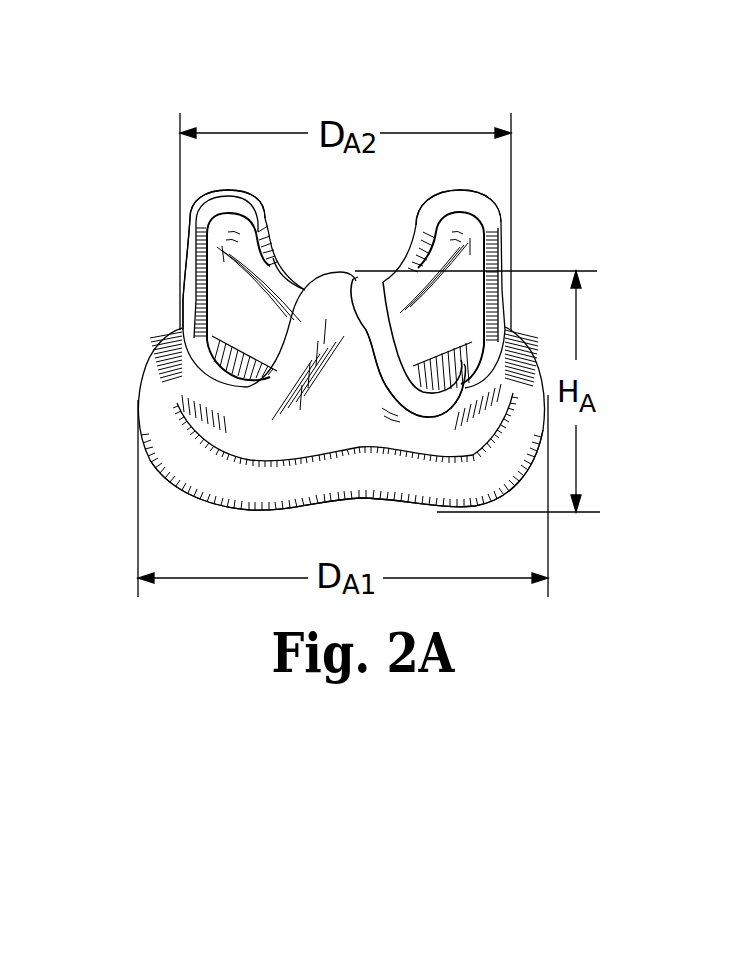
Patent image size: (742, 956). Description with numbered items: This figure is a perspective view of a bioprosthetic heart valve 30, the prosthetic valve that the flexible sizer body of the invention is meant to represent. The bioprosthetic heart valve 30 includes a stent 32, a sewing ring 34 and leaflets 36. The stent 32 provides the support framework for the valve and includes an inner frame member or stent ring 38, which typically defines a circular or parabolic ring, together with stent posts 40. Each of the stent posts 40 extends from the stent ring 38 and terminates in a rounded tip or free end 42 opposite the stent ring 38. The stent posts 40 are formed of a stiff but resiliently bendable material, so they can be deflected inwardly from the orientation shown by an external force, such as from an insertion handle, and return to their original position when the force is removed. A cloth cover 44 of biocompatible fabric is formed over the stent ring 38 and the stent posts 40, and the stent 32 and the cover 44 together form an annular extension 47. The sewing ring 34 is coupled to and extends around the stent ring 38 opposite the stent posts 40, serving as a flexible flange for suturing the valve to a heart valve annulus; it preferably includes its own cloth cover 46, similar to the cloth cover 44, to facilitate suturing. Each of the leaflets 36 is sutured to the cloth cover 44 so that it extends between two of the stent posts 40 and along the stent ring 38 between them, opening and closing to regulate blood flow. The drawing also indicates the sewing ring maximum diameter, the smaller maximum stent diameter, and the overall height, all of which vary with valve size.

The bioprosthetic heart valve 30 is at (488, 162).
The stent 32 is at (386, 292).
The sewing ring 34 is at (150, 390).
The leaflets 36 is at (287, 286).
The stent ring 38 is at (424, 417).
The stent posts 40 is at (387, 367).
The free end 42 is at (224, 192).
The cloth cover 44 is at (213, 203).
The cloth cover 46 is at (162, 429).
The annular extension 47 is at (168, 253).